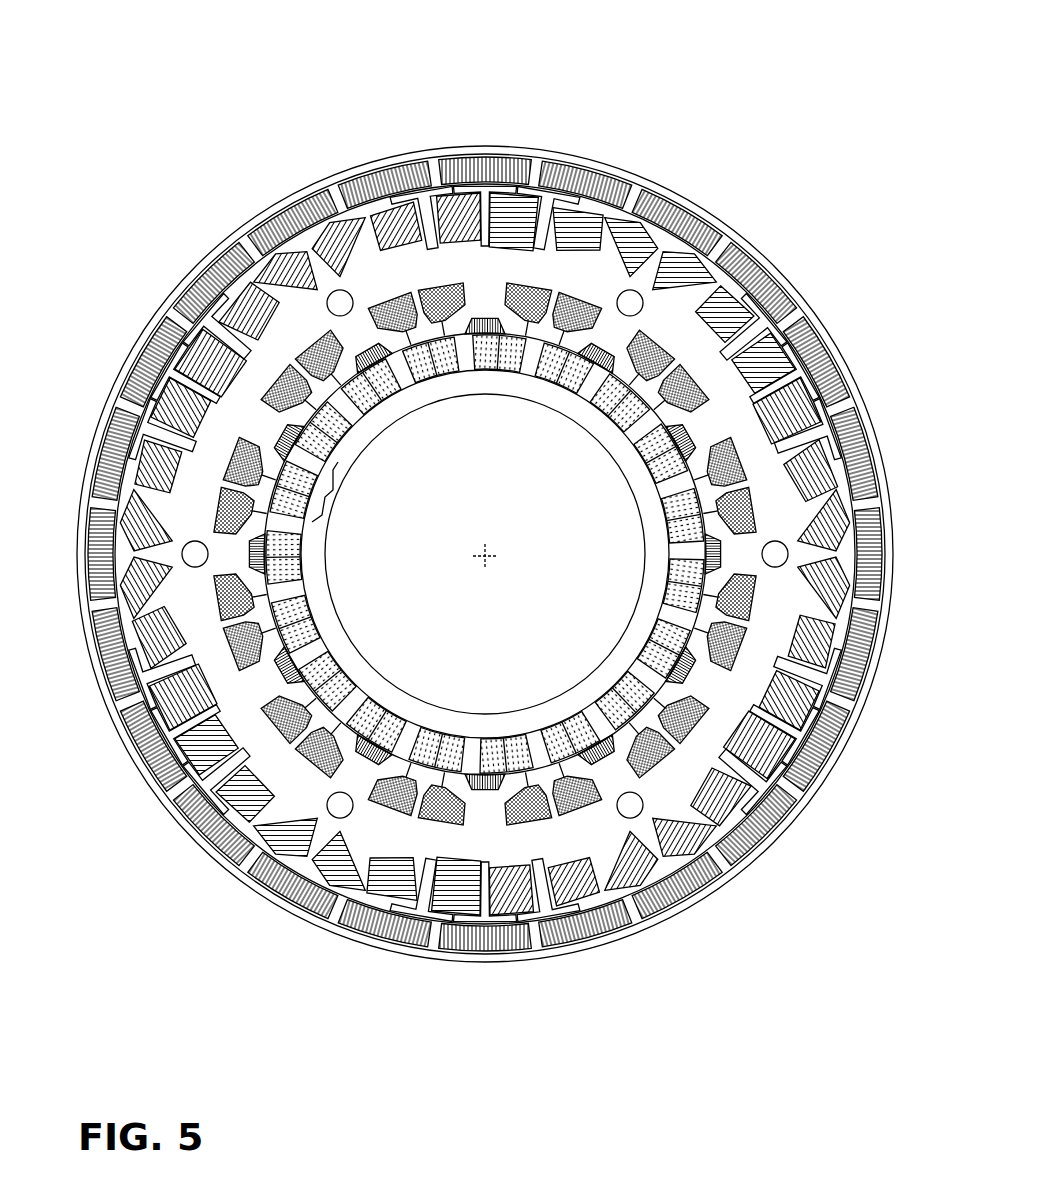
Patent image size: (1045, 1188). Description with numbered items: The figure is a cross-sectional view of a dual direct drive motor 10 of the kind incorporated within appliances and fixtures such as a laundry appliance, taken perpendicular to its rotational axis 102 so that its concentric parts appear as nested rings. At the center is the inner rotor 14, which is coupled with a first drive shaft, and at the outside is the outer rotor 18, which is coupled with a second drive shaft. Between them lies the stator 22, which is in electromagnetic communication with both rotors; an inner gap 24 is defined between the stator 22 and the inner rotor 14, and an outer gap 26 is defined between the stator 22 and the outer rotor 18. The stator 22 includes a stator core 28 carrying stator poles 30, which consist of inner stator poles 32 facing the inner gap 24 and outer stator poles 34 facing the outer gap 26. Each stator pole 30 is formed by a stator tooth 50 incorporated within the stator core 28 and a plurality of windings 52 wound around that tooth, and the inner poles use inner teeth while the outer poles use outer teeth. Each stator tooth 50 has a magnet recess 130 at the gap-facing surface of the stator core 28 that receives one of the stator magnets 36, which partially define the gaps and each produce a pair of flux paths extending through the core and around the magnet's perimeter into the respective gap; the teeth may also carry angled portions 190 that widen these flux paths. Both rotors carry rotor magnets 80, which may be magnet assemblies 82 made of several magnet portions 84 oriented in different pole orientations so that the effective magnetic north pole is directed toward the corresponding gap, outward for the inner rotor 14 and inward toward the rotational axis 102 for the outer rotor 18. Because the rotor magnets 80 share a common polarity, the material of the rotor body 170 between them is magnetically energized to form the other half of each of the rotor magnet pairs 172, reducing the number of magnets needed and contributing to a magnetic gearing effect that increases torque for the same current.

The direct drive motor 10 is at (576, 92).
The inner rotor 14 is at (567, 439).
The outer rotor 18 is at (729, 198).
The stator 22 is at (498, 260).
The inner gap 24 is at (639, 498).
The outer gap 26 is at (787, 299).
The stator core 28 is at (786, 771).
The stator poles 30 is at (509, 786).
The inner stator poles 32 is at (261, 686).
The outer stator poles 34 is at (222, 781).
The stator magnets 36 is at (703, 737).
The stator tooth 50 is at (841, 534).
The windings 52 is at (632, 289).
The rotor magnets 80 is at (505, 723).
The magnet assemblies 82 is at (256, 563).
The magnet portions 84 is at (383, 700).
The rotational axis 102 is at (481, 559).
The magnet recess 130 is at (369, 360).
The rotor body 170 is at (366, 434).
The rotor magnet pairs 172 is at (333, 506).
The angled portions 190 is at (251, 426).